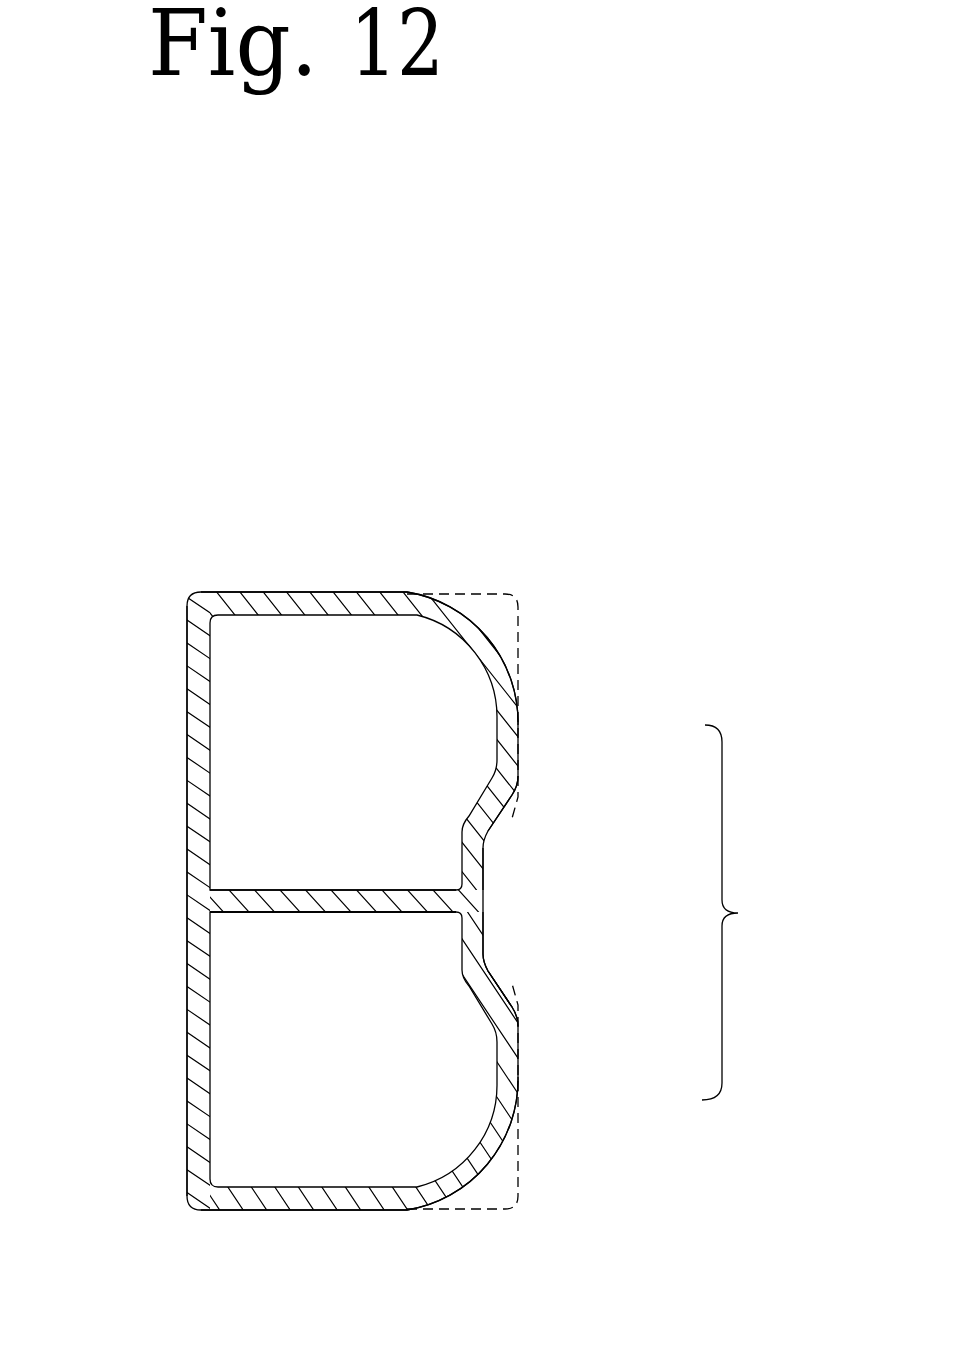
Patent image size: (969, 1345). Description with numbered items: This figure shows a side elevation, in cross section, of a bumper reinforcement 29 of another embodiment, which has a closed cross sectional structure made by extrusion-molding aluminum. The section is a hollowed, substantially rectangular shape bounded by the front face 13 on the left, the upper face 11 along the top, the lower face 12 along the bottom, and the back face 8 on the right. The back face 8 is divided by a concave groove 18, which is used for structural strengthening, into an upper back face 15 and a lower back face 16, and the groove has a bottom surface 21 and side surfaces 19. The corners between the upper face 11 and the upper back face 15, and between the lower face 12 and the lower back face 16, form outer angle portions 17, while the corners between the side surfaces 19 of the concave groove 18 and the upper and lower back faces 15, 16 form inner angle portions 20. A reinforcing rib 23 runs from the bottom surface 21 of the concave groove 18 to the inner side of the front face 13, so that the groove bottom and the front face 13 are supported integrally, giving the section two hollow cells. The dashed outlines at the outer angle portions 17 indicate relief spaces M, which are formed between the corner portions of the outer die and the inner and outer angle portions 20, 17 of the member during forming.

The back face 8 is at (735, 912).
The upper face 11 is at (317, 590).
The lower face 12 is at (337, 1211).
The front face 13 is at (187, 678).
The upper back face 15 is at (518, 718).
The lower back face 16 is at (518, 1092).
The outer angle portion 17 is at (503, 597).
The concave groove 18 is at (475, 953).
The side surface of the concave groove 19 is at (488, 836).
The inner angle portion 20 is at (518, 791).
The bottom surface of the concave groove 21 is at (472, 931).
The reinforcing rib 23 is at (327, 913).
The bumper reinforcement 29 is at (170, 634).
The relief space M is at (506, 623).